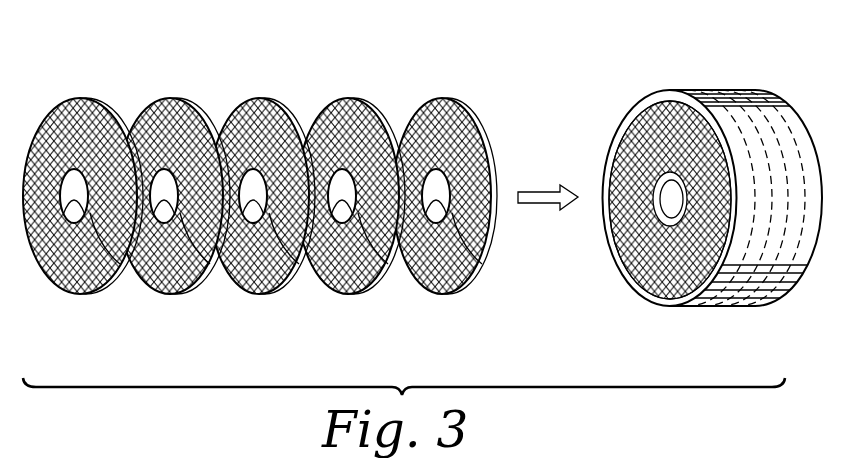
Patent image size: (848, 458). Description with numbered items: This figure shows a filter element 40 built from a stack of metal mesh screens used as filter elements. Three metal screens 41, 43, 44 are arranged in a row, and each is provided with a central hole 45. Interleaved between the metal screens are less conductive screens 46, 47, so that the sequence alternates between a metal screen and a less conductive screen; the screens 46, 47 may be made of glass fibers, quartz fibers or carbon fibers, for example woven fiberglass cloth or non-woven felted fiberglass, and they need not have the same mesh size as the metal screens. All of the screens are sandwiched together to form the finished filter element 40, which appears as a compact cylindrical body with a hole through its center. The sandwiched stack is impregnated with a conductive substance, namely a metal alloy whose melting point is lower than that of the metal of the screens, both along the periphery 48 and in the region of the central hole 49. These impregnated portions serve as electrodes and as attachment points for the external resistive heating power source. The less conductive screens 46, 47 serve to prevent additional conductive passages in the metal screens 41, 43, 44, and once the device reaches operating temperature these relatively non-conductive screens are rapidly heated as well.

The filter element 40 is at (701, 174).
The metal screen 41 is at (82, 97).
The metal screen 43 is at (259, 97).
The metal screen 44 is at (435, 97).
The central hole 45 is at (120, 276).
The less conductive screen 46 is at (170, 97).
The less conductive screen 47 is at (348, 97).
The periphery 48 is at (648, 297).
The region of the central hole 49 is at (671, 173).